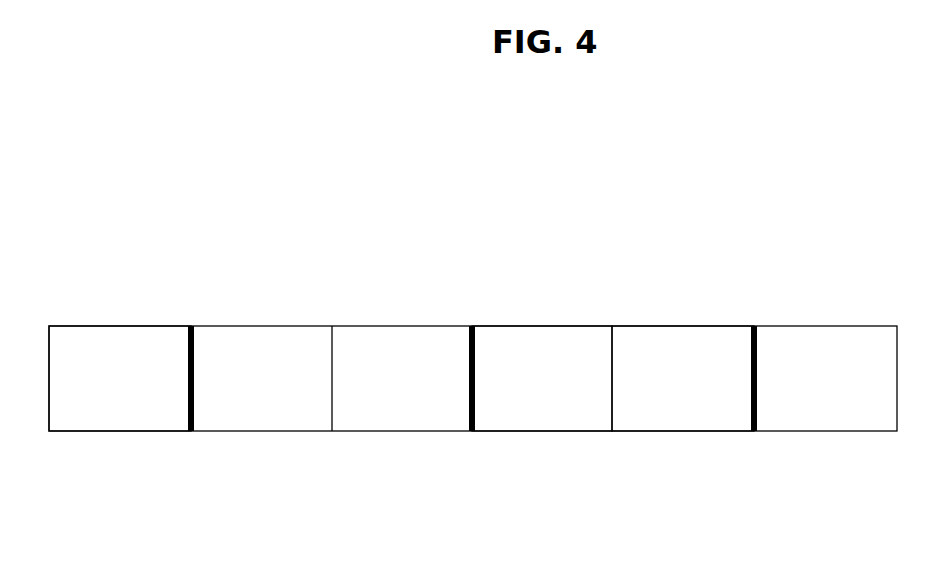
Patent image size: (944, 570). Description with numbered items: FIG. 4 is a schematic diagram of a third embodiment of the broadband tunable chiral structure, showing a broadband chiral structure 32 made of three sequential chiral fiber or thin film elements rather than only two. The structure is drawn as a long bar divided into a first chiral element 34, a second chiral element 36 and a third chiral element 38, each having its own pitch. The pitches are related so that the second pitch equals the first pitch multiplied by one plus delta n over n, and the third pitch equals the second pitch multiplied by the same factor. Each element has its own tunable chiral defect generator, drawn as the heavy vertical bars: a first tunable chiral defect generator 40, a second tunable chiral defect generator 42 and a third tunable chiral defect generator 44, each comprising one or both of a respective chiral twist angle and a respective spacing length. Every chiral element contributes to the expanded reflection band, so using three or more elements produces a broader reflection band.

The broadband chiral structure 32 is at (332, 186).
The first chiral element 34 is at (148, 323).
The second chiral element 36 is at (542, 327).
The third chiral element 38 is at (675, 327).
The first tunable chiral defect generator 40 is at (190, 327).
The second tunable chiral defect generator 42 is at (472, 327).
The third tunable chiral defect generator 44 is at (755, 327).